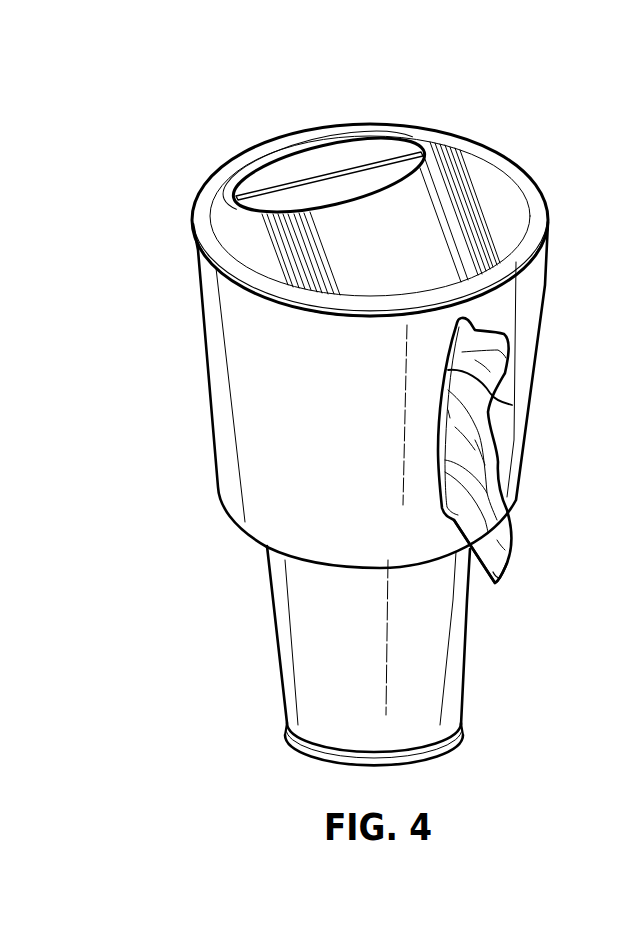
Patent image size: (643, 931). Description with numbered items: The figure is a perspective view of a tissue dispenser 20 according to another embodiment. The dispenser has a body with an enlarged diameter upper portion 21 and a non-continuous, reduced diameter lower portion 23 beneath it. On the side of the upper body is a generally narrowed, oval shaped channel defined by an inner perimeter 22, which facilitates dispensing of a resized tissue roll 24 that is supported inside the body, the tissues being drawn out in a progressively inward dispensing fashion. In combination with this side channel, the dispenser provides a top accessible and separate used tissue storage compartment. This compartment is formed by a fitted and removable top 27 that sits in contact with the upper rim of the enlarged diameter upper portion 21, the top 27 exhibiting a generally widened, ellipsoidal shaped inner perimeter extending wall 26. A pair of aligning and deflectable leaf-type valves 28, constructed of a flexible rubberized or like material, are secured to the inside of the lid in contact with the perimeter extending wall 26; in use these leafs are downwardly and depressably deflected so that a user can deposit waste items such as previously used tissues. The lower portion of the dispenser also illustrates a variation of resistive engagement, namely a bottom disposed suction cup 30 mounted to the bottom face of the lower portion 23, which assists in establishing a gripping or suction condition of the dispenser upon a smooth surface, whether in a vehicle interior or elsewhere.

The tissue dispenser 20 is at (172, 308).
The enlarged diameter upper portion 21 is at (218, 397).
The inner perimeter 22 is at (497, 402).
The reduced diameter lower portion 23 is at (297, 605).
The resized tissue roll 24 is at (500, 578).
The inner perimeter extending wall 26 is at (263, 157).
The fitted and removable top 27 is at (483, 170).
The deflectable leaf-type valves 28 is at (352, 177).
The suction cup 30 is at (322, 750).